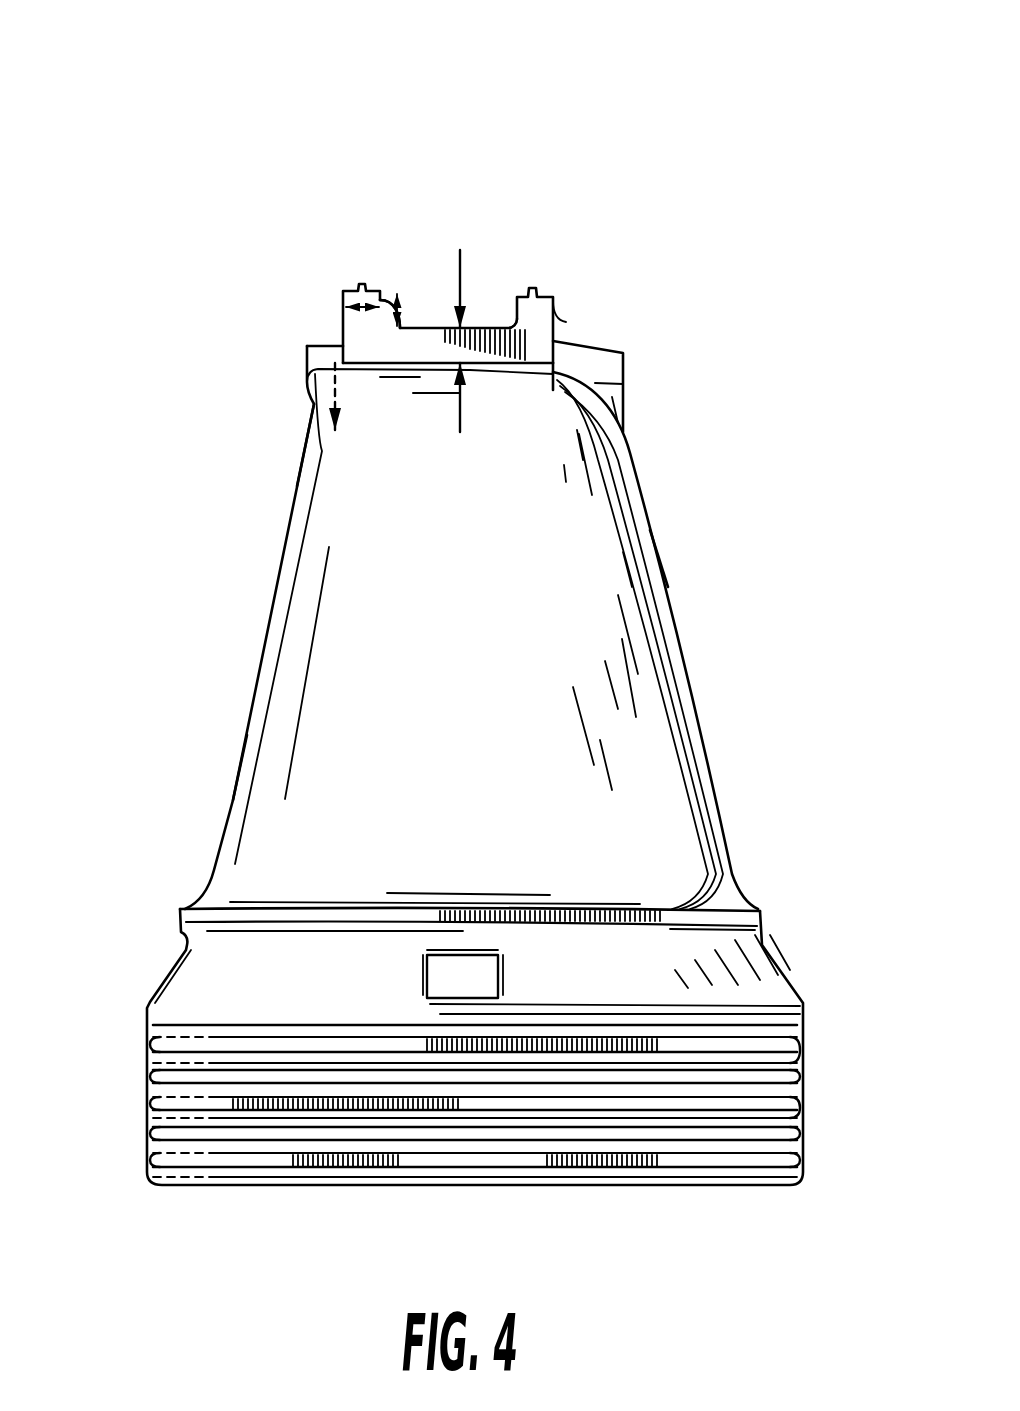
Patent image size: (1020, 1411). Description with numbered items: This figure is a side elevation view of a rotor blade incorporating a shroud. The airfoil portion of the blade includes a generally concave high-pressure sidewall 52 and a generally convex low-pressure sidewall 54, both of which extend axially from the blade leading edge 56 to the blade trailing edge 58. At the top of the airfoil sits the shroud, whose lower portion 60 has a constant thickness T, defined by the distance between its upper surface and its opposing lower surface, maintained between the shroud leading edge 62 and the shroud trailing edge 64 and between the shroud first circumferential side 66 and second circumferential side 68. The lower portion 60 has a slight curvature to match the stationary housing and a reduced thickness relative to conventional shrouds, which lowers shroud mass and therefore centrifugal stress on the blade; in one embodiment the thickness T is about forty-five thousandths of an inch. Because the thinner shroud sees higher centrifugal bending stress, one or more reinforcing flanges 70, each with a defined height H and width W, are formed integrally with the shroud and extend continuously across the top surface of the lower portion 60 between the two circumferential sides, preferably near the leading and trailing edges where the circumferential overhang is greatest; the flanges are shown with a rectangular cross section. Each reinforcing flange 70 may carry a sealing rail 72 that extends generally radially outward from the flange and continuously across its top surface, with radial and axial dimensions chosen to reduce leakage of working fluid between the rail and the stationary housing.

The high-pressure sidewall 52 is at (350, 628).
The low-pressure sidewall 54 is at (297, 486).
The blade leading edge 56 is at (230, 803).
The blade trailing edge 58 is at (667, 588).
The lower portion 60 is at (627, 368).
The shroud leading edge 62 is at (307, 341).
The shroud trailing edge 64 is at (610, 347).
The shroud first circumferential side 66 is at (552, 372).
The shroud second circumferential side 68 is at (334, 343).
The reinforcing flange 70 is at (389, 294).
The sealing rail 72 is at (362, 282).
The width W is at (326, 343).
The height H is at (404, 310).
The thickness T is at (442, 316).